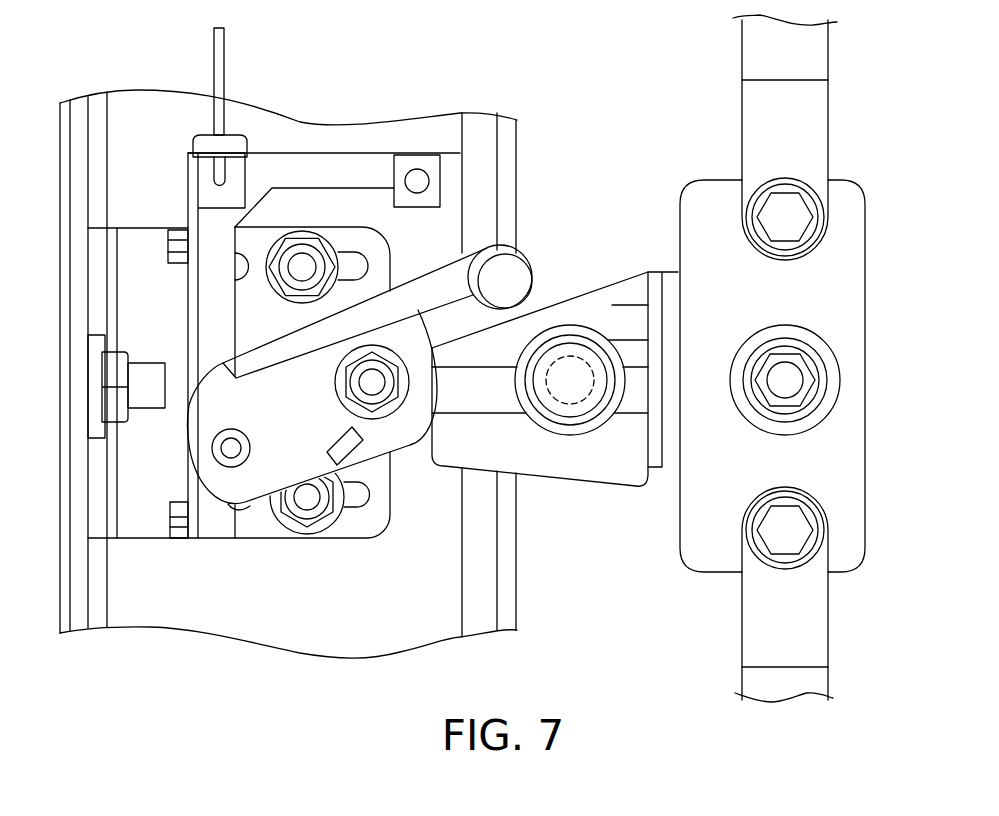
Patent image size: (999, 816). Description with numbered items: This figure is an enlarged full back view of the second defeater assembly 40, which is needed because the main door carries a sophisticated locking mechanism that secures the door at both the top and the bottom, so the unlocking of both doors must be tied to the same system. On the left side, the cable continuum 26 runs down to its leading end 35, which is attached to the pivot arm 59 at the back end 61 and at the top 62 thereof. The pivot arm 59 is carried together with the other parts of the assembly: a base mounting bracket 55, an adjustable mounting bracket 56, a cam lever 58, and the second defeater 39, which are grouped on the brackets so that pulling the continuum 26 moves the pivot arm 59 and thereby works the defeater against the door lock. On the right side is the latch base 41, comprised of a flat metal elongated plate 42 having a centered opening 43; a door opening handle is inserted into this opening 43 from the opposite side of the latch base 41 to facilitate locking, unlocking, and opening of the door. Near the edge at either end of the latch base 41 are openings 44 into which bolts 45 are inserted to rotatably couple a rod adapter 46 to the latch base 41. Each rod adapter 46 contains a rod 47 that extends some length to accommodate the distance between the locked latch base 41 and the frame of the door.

The cable continuum 26 is at (224, 40).
The leading end 35 is at (226, 168).
The second defeater 39 is at (280, 455).
The second defeater assembly 40 is at (366, 140).
The latch base 41 is at (833, 359).
The flat metal elongated plate 42 is at (763, 304).
The centered opening 43 is at (753, 413).
The openings 44 is at (818, 234).
The bolts 45 is at (788, 214).
The rod adapter 46 is at (813, 132).
The rod 47 is at (813, 52).
The base mounting bracket 55 is at (137, 322).
The adjustable mounting bracket 56 is at (378, 262).
The cam lever 58 is at (238, 441).
The pivot arm 59 is at (232, 281).
The back end 61 is at (178, 190).
The top 62 is at (600, 465).